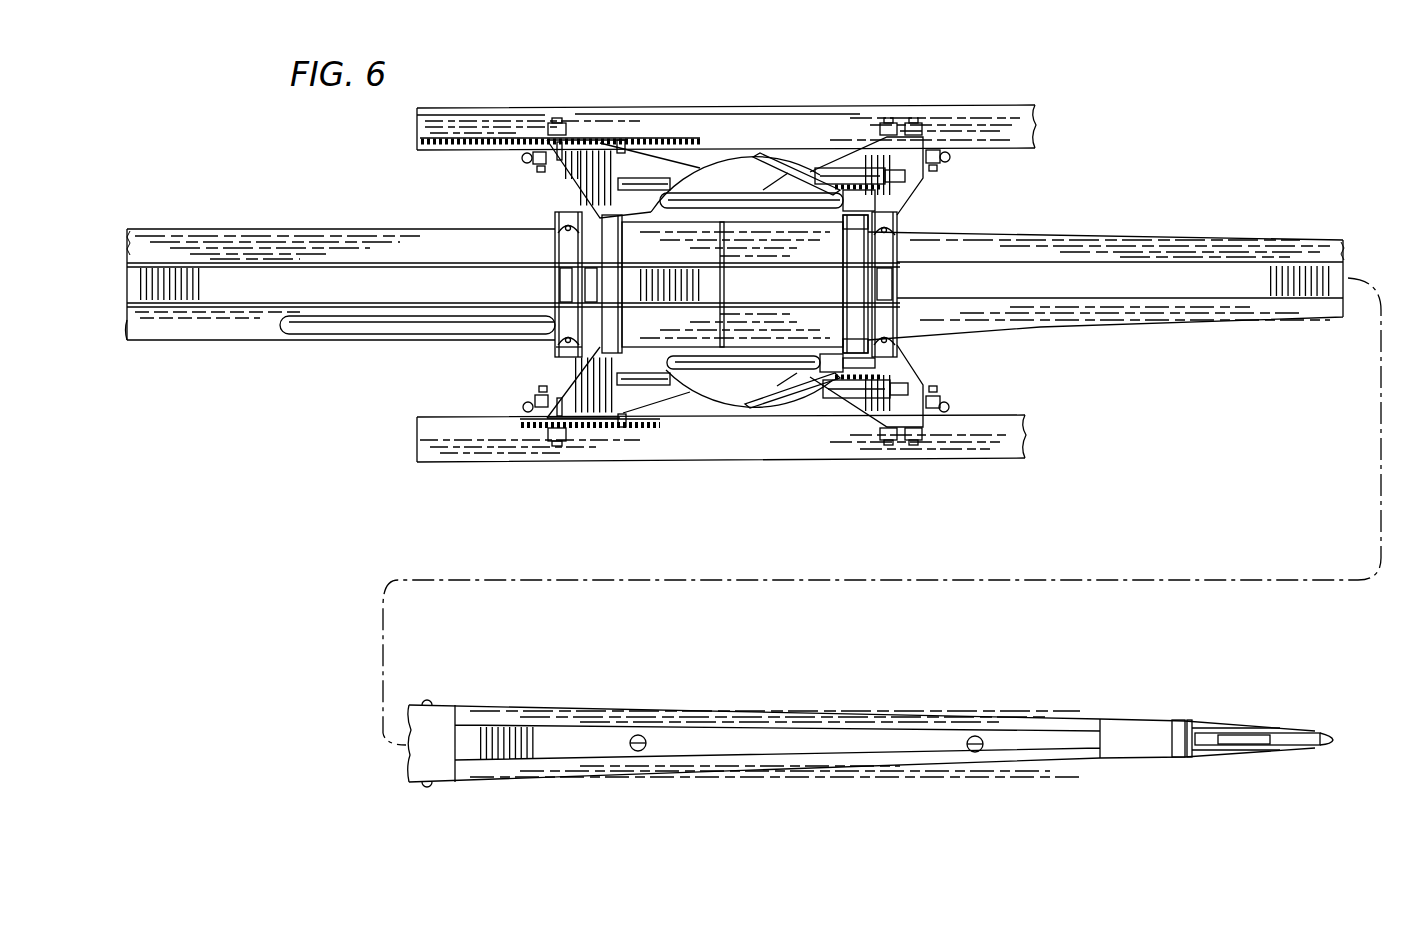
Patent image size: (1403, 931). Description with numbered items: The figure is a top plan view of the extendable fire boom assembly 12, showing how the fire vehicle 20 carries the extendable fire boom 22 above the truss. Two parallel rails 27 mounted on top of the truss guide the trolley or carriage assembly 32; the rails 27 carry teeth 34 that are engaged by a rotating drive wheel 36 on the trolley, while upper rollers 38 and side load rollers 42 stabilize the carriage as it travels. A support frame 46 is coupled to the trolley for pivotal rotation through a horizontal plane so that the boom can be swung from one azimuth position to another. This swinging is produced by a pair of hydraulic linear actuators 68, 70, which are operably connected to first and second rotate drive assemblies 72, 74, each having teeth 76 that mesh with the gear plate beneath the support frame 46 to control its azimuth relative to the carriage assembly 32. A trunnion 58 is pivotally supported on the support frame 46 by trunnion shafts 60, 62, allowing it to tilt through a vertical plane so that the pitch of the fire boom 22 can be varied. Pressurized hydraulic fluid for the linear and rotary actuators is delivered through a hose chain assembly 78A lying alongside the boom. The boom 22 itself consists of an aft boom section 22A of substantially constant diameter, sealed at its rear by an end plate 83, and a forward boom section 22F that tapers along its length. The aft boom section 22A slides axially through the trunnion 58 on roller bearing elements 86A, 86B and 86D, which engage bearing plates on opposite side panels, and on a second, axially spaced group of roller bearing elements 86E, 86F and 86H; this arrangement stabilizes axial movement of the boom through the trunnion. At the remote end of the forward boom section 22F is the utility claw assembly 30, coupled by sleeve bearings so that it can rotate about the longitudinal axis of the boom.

The extendable fire boom assembly 12 is at (1158, 107).
The fire vehicle 20 is at (686, 160).
The extendable fire boom 22 is at (1215, 233).
The aft boom section 22A is at (320, 228).
The forward boom section 22F is at (752, 705).
The rails 27 is at (1030, 107).
The utility claw assembly 30 is at (1232, 714).
The carriage assembly 32 is at (575, 380).
The teeth 34 is at (530, 143).
The drive wheel 36 is at (623, 139).
The upper rollers 38 is at (568, 123).
The side load rollers 42 is at (522, 158).
The support frame 46 is at (720, 370).
The trunnion 58 is at (700, 230).
The trunnion shaft 60 is at (880, 365).
The trunnion shaft 62 is at (876, 200).
The hydraulic linear actuator 68 is at (835, 392).
The hydraulic linear actuator 70 is at (848, 170).
The first rotate drive assembly 72 is at (895, 380).
The second rotate drive assembly 74 is at (890, 190).
The teeth 76 is at (848, 205).
The hose chain assembly 78A is at (438, 324).
The end plate 83 is at (130, 323).
The roller bearing element 86A is at (566, 285).
The roller bearing element 86B is at (562, 345).
The roller bearing element 86D is at (560, 213).
The roller bearing element 86E is at (886, 285).
The roller bearing element 86F is at (897, 240).
The roller bearing element 86H is at (893, 335).